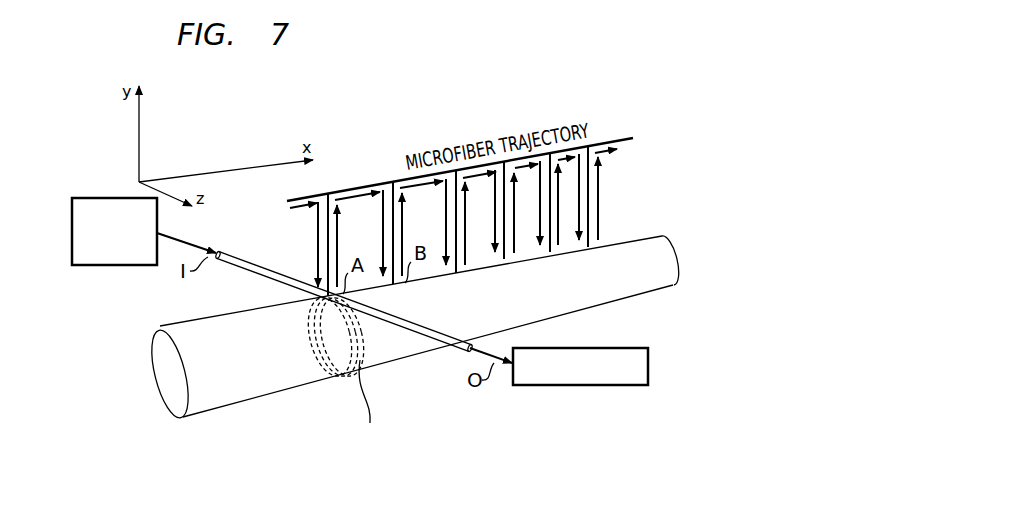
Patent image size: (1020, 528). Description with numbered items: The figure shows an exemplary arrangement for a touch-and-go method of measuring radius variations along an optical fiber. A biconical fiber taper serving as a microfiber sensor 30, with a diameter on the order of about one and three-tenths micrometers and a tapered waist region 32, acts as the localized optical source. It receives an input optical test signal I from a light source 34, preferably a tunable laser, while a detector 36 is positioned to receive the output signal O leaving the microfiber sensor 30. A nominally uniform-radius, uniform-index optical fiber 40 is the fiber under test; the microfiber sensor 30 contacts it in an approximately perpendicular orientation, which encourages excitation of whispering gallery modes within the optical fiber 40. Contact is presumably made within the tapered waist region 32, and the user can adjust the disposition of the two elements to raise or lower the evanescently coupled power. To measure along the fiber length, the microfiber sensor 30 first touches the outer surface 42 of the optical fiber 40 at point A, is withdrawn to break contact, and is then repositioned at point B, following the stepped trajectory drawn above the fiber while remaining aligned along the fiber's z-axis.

The microfiber sensor 30 is at (248, 258).
The tapered waist region 32 is at (322, 302).
The light source 34 is at (72, 232).
The detector 36 is at (649, 365).
The optical fiber 40 is at (415, 311).
The outer surface 42 is at (170, 330).